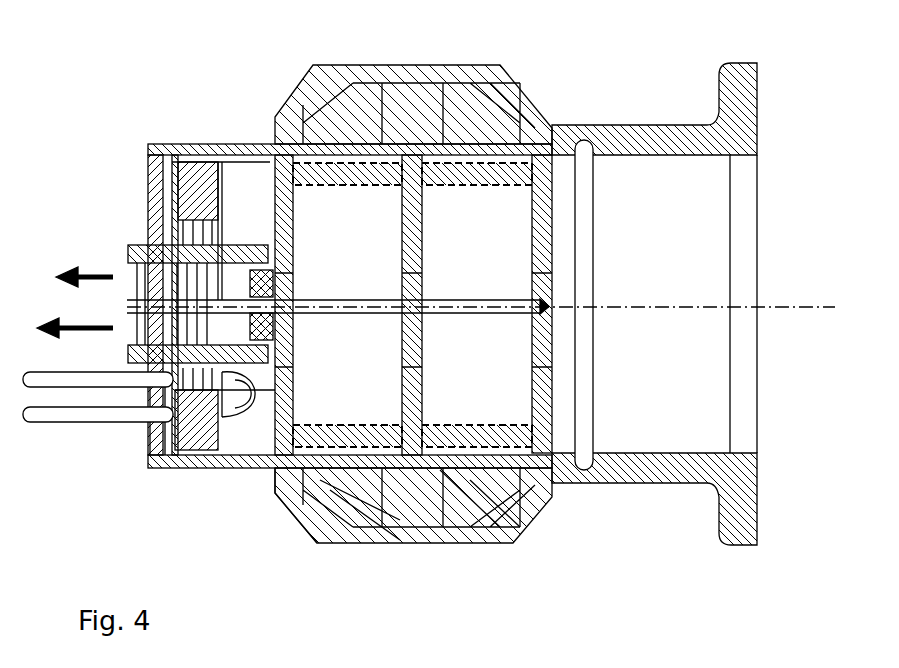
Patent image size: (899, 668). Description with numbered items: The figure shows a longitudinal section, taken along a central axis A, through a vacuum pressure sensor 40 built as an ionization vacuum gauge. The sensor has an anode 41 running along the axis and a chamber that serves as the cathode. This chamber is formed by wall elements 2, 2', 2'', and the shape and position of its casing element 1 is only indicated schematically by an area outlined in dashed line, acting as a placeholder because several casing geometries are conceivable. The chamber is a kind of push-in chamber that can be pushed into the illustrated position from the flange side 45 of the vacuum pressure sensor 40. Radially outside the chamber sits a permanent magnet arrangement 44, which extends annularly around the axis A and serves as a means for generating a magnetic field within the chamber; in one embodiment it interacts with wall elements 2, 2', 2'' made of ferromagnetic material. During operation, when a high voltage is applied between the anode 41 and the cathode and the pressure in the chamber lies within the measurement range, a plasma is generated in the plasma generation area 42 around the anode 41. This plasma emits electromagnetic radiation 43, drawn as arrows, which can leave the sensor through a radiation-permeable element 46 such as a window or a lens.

The vacuum pressure sensor 40 is at (271, 42).
The flange side 45 is at (676, 304).
The wall element 2 is at (403, 305).
The wall element 2' is at (395, 241).
The wall element 2'' is at (549, 240).
The casing element 1 is at (462, 430).
The anode 41 is at (457, 300).
The central axis A is at (805, 305).
The radiation-permeable element 46 is at (213, 283).
The electromagnetic radiation 43 is at (93, 272).
The plasma generation area 42 is at (304, 337).
The permanent magnet arrangement 44 is at (339, 480).